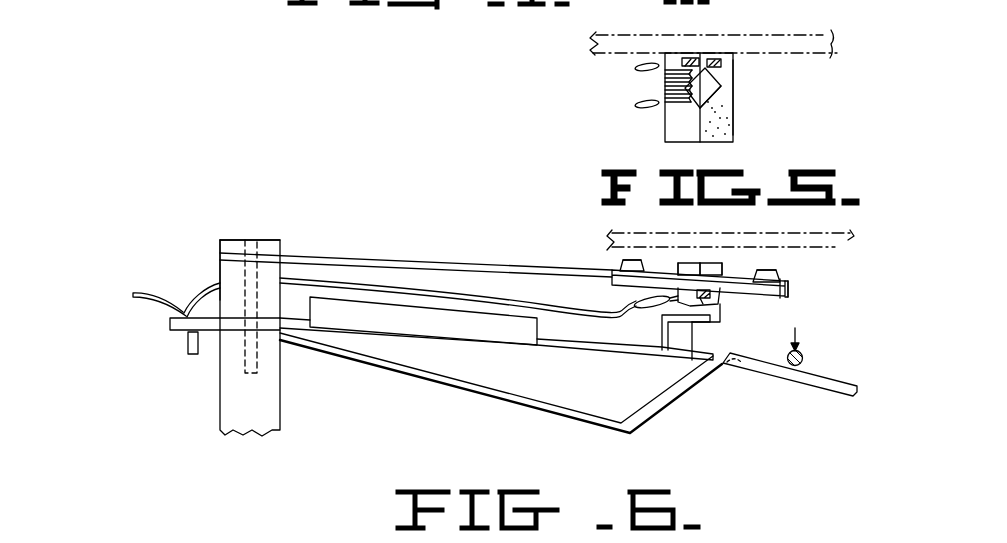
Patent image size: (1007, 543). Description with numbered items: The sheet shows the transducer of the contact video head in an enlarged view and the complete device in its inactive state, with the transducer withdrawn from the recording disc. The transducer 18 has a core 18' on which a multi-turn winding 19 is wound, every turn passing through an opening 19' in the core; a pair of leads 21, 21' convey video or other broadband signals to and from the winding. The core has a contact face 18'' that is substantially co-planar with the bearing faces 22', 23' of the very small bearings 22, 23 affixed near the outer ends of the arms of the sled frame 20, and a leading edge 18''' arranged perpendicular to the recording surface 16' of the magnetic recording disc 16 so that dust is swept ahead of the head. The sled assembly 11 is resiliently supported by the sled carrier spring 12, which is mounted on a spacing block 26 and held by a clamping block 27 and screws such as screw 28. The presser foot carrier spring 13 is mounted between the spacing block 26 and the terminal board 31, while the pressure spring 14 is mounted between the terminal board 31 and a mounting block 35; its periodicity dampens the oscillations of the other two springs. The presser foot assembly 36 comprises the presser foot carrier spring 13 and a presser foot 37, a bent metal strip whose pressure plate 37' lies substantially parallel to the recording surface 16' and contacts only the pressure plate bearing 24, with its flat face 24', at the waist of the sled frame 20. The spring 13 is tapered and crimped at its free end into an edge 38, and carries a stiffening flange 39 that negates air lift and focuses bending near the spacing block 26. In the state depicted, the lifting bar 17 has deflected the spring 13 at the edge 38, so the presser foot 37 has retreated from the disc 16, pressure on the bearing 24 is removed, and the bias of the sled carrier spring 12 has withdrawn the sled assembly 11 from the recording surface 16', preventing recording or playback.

In FIG. 6, the sled assembly 11 is at (790, 288).
In FIG. 6, the sled carrier spring 12 is at (470, 263).
In FIG. 6, the presser foot carrier spring 13 is at (572, 349).
In FIG. 6, the pressure spring 14 is at (658, 410).
In FIG. 5, the magnetic recording disc 16 is at (734, 34).
In FIG. 6, the magnetic recording disc 16 is at (754, 247).
In FIG. 5, the recording surface 16' is at (741, 58).
In FIG. 6, the recording surface 16' is at (760, 268).
In FIG. 6, the lifting bar 17 is at (803, 358).
In FIG. 5, the transducer 18 is at (727, 97).
In FIG. 6, the transducer 18 is at (700, 241).
In FIG. 5, the transducer core 18' is at (776, 97).
In FIG. 6, the transducer core 18' is at (733, 259).
In FIG. 5, the contact face 18'' is at (669, 33).
In FIG. 6, the contact face 18'' is at (667, 241).
In FIG. 5, the leading edge 18''' is at (636, 117).
In FIG. 6, the leading edge 18''' is at (628, 318).
In FIG. 5, the transducer winding 19 is at (670, 104).
In FIG. 5, the opening 19' is at (755, 85).
In FIG. 6, the sled frame 20 is at (788, 296).
In FIG. 5, the lead 21 is at (629, 76).
In FIG. 6, the lead 21 is at (384, 298).
In FIG. 5, the lead 21' is at (610, 98).
In FIG. 6, the bearing 22 is at (607, 253).
In FIG. 6, the bearing face 22' is at (605, 234).
In FIG. 6, the bearing 23 is at (793, 272).
In FIG. 6, the bearing face 23' is at (785, 239).
In FIG. 6, the pressure plate bearing 24 is at (726, 308).
In FIG. 6, the flat face 24' is at (738, 325).
In FIG. 6, the spacing block 26 is at (226, 272).
In FIG. 6, the clamping block 27 is at (222, 242).
In FIG. 6, the screw 28 is at (262, 240).
In FIG. 6, the terminal board 31 is at (172, 326).
In FIG. 6, the mounting block 35 is at (224, 402).
In FIG. 6, the presser foot assembly 36 is at (647, 368).
In FIG. 6, the presser foot 37 is at (668, 332).
In FIG. 6, the pressure plate 37' is at (674, 358).
In FIG. 6, the edge 38 is at (832, 376).
In FIG. 6, the flange 39 is at (476, 339).